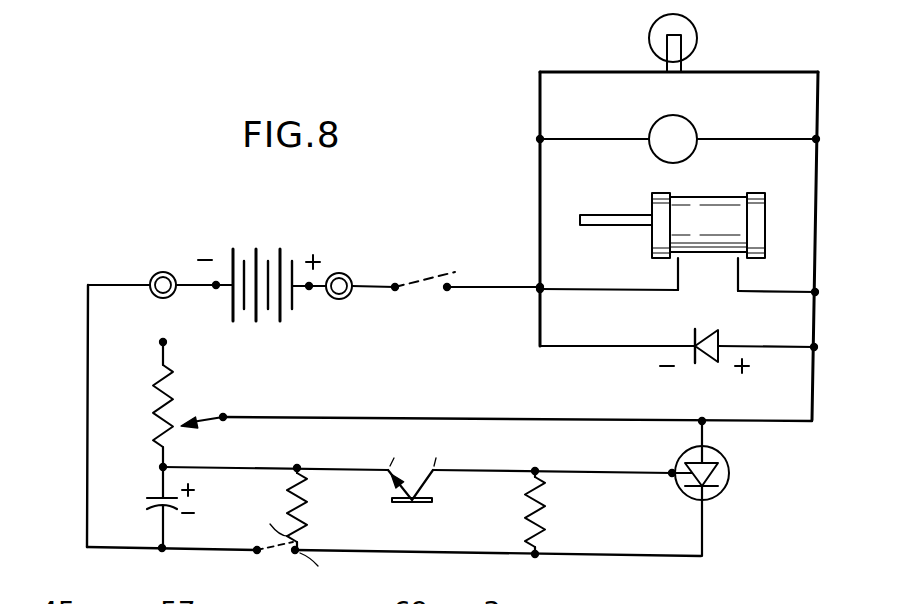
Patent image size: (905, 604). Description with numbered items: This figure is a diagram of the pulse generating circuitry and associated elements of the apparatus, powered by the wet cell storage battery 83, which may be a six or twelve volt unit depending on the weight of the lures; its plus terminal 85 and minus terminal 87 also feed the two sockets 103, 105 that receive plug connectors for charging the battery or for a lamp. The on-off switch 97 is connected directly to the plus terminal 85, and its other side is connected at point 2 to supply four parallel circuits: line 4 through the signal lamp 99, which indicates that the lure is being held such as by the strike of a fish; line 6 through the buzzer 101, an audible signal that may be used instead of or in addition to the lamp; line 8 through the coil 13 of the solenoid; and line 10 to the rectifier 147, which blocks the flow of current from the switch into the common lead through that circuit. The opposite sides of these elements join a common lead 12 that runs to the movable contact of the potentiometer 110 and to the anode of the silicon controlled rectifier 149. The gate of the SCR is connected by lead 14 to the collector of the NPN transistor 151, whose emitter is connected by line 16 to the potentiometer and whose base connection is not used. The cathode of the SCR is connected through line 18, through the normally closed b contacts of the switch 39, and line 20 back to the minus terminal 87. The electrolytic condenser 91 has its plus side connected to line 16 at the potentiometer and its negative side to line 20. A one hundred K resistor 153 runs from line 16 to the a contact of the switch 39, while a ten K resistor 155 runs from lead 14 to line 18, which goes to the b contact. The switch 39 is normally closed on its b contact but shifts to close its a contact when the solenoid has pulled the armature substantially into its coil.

The connection point 2 is at (538, 285).
The line 4 is at (596, 70).
The line 6 is at (601, 137).
The line 8 is at (613, 289).
The line 10 is at (585, 346).
The common lead 12 is at (815, 316).
The coil of the solenoid 13 is at (731, 199).
The lead 14 is at (566, 470).
The line 16 is at (242, 466).
The line 18 is at (704, 545).
The line 20 is at (87, 412).
The switch 39 is at (275, 552).
The wet cell storage battery 83 is at (258, 250).
The plus terminal 85 is at (309, 290).
The minus terminal 87 is at (216, 290).
The electrolytic condenser 91 is at (152, 506).
The on-off switch 97 is at (422, 280).
The signal lamp 99 is at (693, 35).
The buzzer 101 is at (695, 124).
The socket 103 is at (344, 272).
The socket 105 is at (163, 271).
The potentiometer 110 is at (176, 392).
The rectifier 147 is at (716, 338).
The silicon controlled rectifier 149 is at (730, 484).
The NPN transistor 151 is at (412, 506).
The 100K resistor 153 is at (318, 491).
The 10K resistor 155 is at (548, 520).